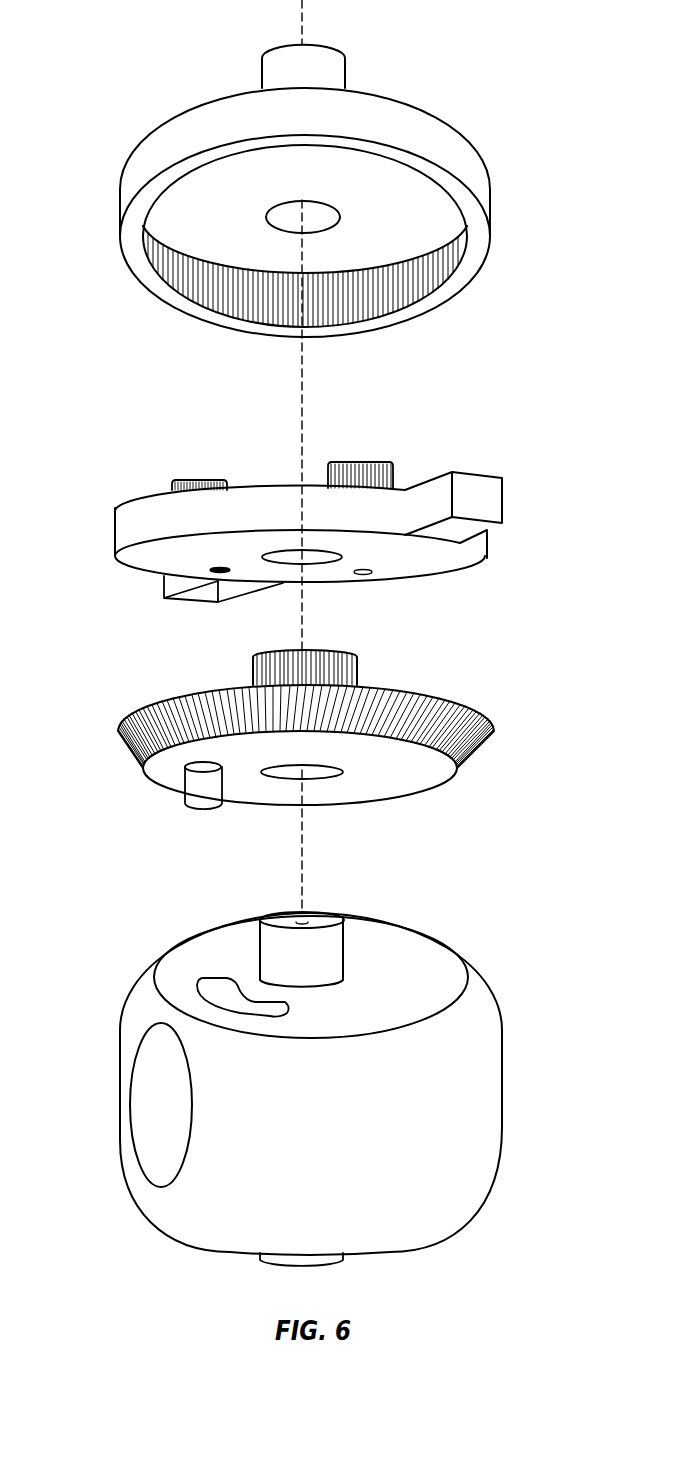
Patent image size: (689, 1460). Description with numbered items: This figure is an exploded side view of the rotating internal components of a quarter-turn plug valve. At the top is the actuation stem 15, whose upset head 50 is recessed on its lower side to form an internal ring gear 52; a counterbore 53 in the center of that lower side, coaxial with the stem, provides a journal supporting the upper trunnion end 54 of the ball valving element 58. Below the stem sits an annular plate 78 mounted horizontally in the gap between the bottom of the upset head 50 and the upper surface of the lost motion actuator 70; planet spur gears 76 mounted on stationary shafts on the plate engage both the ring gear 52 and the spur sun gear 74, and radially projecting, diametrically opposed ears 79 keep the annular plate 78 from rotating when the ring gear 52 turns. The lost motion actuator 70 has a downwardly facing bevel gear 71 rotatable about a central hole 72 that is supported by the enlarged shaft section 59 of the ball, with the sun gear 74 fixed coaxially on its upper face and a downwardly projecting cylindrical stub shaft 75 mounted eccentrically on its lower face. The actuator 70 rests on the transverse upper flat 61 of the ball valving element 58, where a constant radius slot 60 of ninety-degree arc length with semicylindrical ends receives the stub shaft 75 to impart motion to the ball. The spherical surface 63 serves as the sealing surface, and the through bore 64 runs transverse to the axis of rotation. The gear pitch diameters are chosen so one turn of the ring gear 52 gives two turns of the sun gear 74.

The actuation stem 15 is at (262, 80).
The upset head 50 is at (492, 200).
The internal ring gear 52 is at (167, 253).
The counterbore 53 is at (322, 203).
The upper trunnion end 54 is at (305, 923).
The ball valving element 58 is at (503, 1128).
The enlarged shaft section 59 is at (343, 943).
The constant radius slot 60 is at (205, 978).
The upper flat 61 is at (238, 935).
The spherical surface 63 is at (137, 987).
The through bore 64 is at (138, 1092).
The lost motion actuator 70 is at (118, 727).
The bevel gear 71 is at (468, 758).
The central hole 72 is at (318, 773).
The spur sun gear 74 is at (330, 667).
The cylindrical stub shaft 75 is at (182, 783).
The planet spur gears 76 is at (170, 487).
The annular plate 78 is at (115, 537).
The ears 79 is at (163, 587).